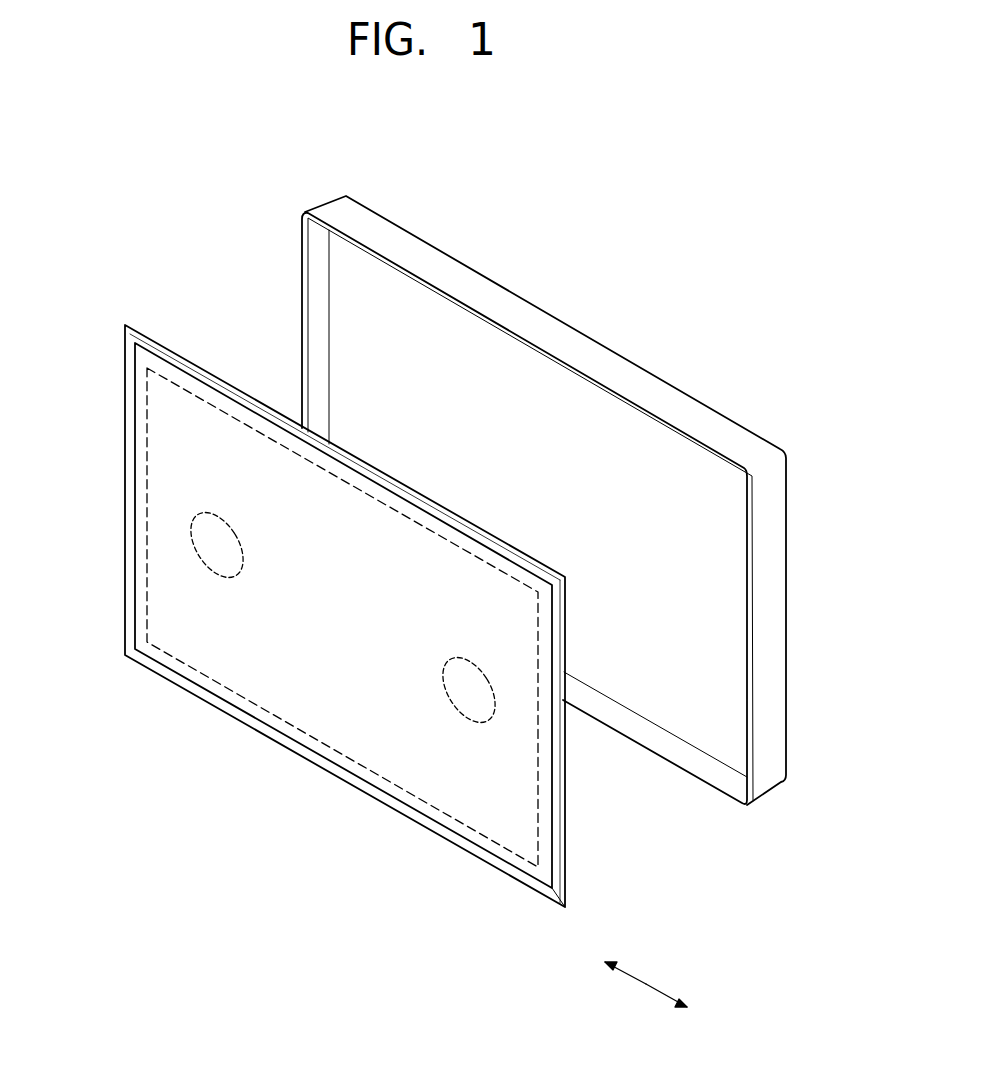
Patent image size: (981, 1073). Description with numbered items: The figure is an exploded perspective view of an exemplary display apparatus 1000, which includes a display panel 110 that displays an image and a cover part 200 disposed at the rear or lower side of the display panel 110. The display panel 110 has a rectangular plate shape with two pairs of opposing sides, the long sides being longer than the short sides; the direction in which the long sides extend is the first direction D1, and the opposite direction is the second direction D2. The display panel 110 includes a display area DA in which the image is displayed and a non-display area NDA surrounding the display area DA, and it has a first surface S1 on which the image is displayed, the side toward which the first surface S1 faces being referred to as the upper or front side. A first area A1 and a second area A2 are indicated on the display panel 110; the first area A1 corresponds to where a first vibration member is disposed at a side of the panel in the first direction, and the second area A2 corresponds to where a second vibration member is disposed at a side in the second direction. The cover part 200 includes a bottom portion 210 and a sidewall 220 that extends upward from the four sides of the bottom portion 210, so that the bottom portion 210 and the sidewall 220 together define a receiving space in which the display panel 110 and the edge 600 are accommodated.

The display apparatus 1000 is at (653, 308).
The cover part 200 is at (224, 245).
The sidewall 220 is at (320, 252).
The bottom portion 210 is at (342, 283).
The edge 600 is at (128, 405).
The display panel 110 is at (138, 468).
The first surface S1 is at (236, 443).
The first area A1 is at (190, 529).
The second area A2 is at (452, 703).
The display area DA is at (266, 681).
The non-display area NDA is at (299, 734).
The first direction D1 is at (679, 1003).
The second direction D2 is at (610, 966).